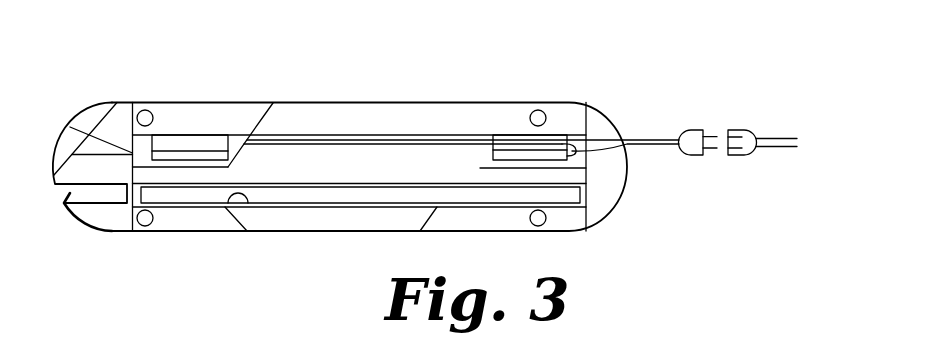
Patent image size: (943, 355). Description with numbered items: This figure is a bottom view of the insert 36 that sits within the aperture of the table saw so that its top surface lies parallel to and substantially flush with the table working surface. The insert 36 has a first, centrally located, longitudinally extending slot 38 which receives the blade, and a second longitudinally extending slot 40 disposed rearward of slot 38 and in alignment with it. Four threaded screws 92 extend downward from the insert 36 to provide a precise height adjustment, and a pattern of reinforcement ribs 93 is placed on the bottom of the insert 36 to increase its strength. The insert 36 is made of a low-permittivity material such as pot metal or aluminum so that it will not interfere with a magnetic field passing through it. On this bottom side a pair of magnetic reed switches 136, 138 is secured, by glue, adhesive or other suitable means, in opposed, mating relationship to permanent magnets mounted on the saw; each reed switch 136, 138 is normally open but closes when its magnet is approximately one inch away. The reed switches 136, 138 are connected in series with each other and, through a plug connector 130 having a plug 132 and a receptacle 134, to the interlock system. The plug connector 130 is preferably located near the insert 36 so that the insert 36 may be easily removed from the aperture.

The insert 36 is at (463, 102).
The first longitudinally extending slot 38 is at (247, 203).
The second longitudinally extending slot 40 is at (64, 205).
The threaded screws 92 is at (150, 112).
The reinforcement ribs 93 is at (97, 138).
The plug connector 130 is at (737, 130).
The plug 132 is at (692, 147).
The receptacle 134 is at (745, 155).
The magnetic reed switch 136 is at (195, 151).
The magnetic reed switch 138 is at (513, 155).